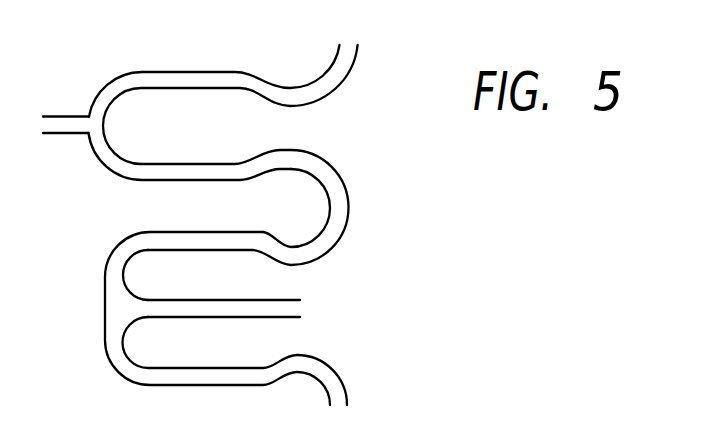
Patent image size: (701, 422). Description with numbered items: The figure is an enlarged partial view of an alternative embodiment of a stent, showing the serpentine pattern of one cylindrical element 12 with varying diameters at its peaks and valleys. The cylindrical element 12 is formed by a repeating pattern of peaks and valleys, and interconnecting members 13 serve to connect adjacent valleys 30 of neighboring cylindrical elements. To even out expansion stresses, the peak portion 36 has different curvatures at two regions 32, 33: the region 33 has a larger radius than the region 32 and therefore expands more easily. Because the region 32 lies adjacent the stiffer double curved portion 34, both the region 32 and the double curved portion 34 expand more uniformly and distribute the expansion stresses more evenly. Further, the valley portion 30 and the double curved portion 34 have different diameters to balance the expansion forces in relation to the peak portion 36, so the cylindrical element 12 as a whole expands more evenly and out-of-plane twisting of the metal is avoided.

The cylindrical element 12 is at (212, 55).
The interconnecting member 13 is at (65, 116).
The valley portion 30 is at (105, 115).
The region 32 is at (327, 228).
The region 33 is at (270, 172).
The double curved portion 34 is at (134, 259).
The peak portion 36 is at (345, 172).